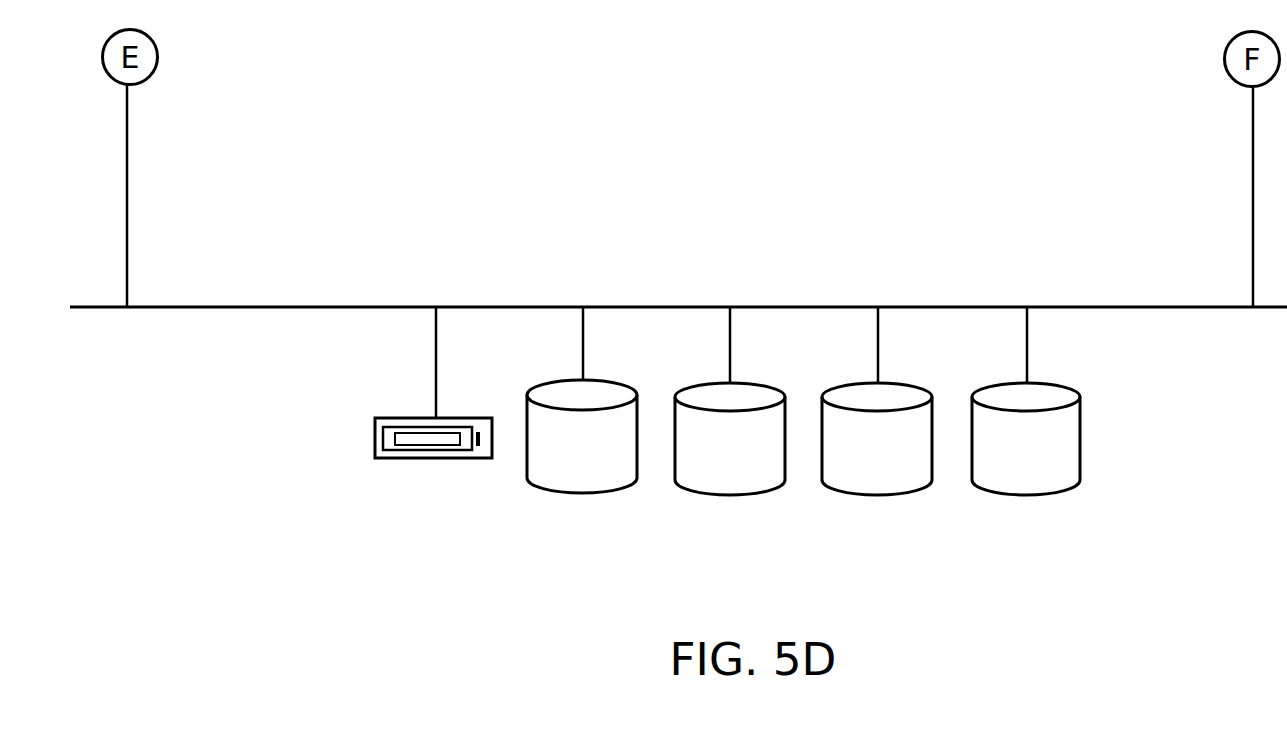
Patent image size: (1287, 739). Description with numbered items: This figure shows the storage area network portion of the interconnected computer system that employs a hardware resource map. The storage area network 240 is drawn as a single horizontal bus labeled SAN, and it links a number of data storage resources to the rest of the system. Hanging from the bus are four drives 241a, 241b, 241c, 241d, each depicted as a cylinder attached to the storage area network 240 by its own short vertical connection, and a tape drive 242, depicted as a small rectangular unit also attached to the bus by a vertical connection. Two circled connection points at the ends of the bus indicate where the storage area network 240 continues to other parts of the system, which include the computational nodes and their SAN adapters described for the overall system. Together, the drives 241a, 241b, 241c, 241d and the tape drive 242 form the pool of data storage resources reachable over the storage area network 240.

The storage area network (SAN) 240 is at (231, 308).
The tape drive 242 is at (433, 402).
The drive 241a is at (582, 420).
The drive 241b is at (730, 420).
The drive 241c is at (877, 420).
The drive 241d is at (1026, 420).